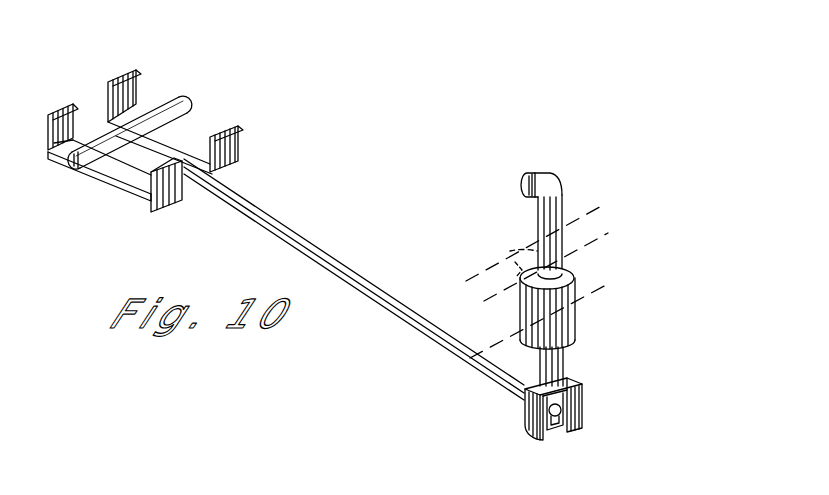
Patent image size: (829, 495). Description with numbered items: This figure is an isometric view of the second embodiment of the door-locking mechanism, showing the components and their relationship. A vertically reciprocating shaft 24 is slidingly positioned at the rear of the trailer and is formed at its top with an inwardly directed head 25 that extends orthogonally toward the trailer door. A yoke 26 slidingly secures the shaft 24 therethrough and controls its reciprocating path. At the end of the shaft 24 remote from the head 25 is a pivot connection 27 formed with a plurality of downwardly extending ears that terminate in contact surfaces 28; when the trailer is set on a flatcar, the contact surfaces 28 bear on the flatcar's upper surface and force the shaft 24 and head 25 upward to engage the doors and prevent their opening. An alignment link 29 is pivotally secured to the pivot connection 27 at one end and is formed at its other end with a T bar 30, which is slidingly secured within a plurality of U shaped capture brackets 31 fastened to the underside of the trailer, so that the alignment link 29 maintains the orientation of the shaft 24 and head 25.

The vertically reciprocating shaft 24 is at (566, 213).
The inwardly directed head 25 is at (537, 173).
The yoke 26 is at (560, 335).
The pivot connection 27 is at (573, 382).
The contact surfaces 28 is at (558, 428).
The alignment link 29 is at (433, 351).
The T bar 30 is at (187, 103).
The U shaped capture brackets 31 is at (80, 112).